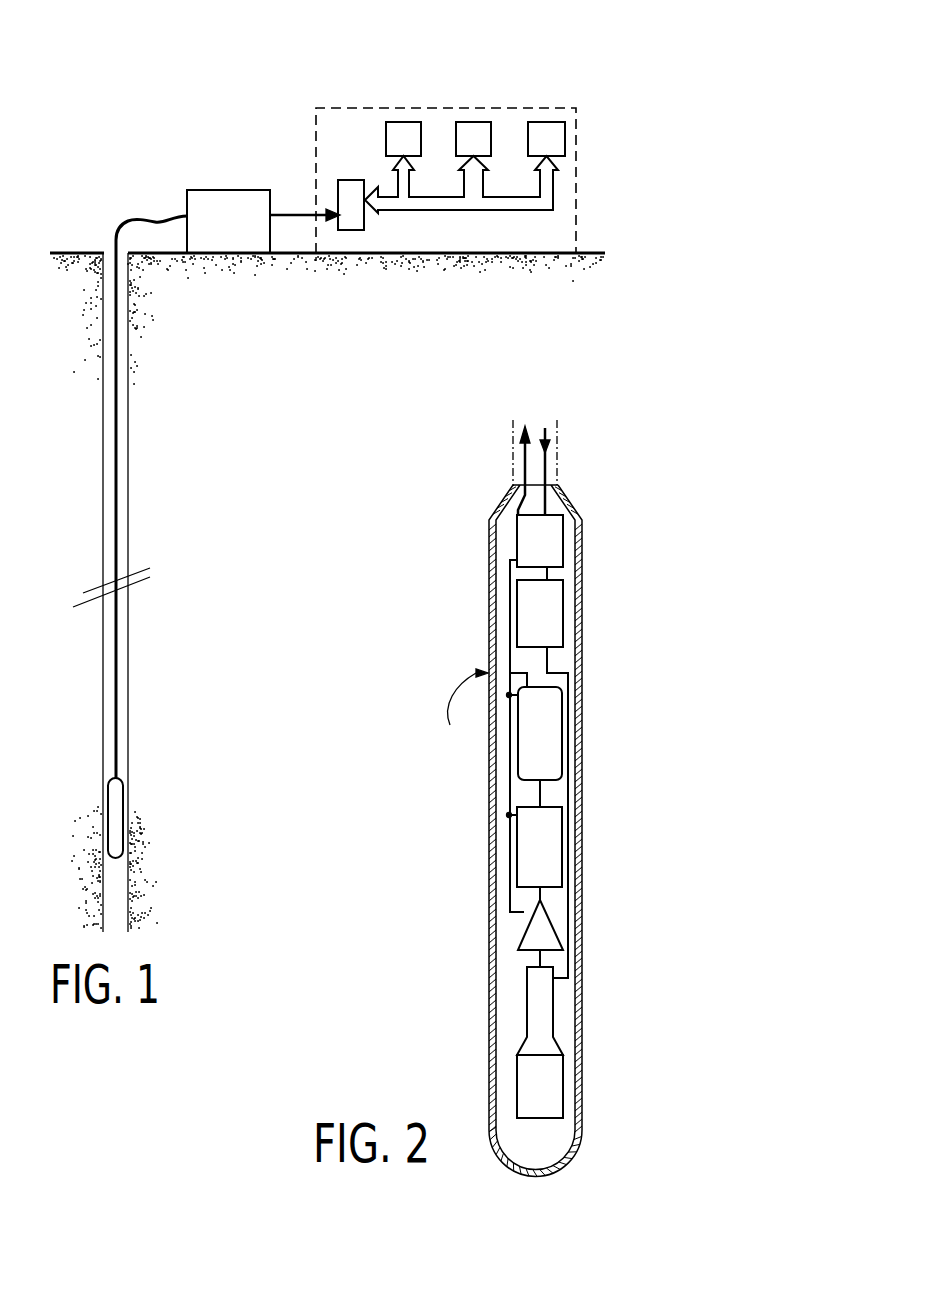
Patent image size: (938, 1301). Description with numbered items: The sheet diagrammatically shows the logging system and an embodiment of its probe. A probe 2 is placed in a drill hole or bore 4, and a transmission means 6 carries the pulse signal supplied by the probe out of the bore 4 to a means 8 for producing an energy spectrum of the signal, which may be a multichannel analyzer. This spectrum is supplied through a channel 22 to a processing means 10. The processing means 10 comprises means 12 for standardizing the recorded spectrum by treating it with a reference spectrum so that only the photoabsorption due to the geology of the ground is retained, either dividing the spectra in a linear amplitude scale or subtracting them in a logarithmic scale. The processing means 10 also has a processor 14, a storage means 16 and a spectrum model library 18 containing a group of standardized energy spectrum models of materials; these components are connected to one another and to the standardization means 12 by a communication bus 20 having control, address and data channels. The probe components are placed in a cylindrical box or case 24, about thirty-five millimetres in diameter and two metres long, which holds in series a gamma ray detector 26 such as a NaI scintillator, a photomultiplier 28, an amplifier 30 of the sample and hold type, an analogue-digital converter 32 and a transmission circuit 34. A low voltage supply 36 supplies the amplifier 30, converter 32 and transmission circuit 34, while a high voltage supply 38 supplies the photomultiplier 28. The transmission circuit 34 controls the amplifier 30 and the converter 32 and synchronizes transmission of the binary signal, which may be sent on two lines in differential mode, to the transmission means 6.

In FIG. 1, the probe 2 is at (116, 812).
In FIG. 2, the probe 2 is at (463, 709).
In FIG. 1, the drill hole or bore 4 is at (121, 462).
In FIG. 1, the transmission means 6 is at (125, 221).
In FIG. 2, the transmission means 6 is at (568, 434).
In FIG. 1, the energy spectrum production means 8 is at (190, 190).
In FIG. 1, the processing means 10 is at (322, 108).
In FIG. 1, the standardization means 12 is at (352, 223).
In FIG. 1, the processor 14 is at (402, 130).
In FIG. 1, the storage means 16 is at (468, 130).
In FIG. 1, the spectrum model library 18 is at (543, 133).
In FIG. 1, the communication bus 20 is at (440, 203).
In FIG. 1, the channel 22 is at (290, 212).
In FIG. 2, the cylindrical box or case 24 is at (493, 878).
In FIG. 2, the gamma ray detector 26 is at (545, 1078).
In FIG. 2, the photomultiplier 28 is at (545, 1007).
In FIG. 2, the amplifier 30 is at (540, 918).
In FIG. 2, the analogue-digital converter 32 is at (548, 817).
In FIG. 2, the transmission circuit 34 is at (552, 707).
In FIG. 2, the low voltage supply 36 is at (548, 527).
In FIG. 2, the high voltage supply 38 is at (548, 607).